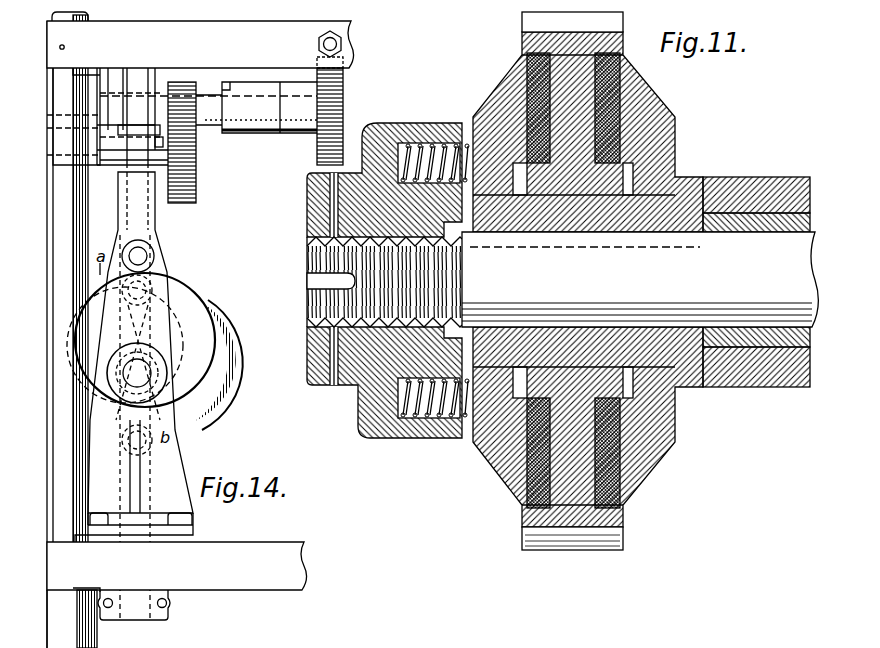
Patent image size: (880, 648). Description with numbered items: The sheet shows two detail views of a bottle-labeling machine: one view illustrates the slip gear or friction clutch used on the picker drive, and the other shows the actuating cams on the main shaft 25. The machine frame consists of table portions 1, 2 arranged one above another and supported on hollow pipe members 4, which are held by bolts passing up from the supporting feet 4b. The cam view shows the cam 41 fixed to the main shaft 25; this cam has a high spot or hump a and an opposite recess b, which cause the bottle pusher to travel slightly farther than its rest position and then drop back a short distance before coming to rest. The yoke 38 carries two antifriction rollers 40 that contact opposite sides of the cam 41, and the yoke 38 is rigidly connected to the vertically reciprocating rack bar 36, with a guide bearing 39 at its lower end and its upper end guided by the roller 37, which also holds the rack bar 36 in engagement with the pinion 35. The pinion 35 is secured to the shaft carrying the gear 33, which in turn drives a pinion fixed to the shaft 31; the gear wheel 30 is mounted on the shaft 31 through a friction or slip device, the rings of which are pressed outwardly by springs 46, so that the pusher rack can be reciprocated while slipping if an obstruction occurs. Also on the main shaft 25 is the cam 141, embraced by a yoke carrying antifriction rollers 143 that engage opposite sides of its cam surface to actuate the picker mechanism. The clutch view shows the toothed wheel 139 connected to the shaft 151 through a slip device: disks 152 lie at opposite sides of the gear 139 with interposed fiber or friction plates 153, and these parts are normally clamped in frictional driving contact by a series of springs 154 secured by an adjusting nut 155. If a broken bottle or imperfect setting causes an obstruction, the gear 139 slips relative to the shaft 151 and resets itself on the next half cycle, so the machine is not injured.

In FIG. 14, the table portion 1 is at (177, 566).
In FIG. 14, the central table 2 is at (200, 44).
In FIG. 14, the hollow pipe member 4 is at (53, 288).
In FIG. 14, the supporting foot 4b is at (52, 642).
In FIG. 14, the main shaft 25 is at (137, 373).
In FIG. 14, the gear wheel 30 is at (340, 106).
In FIG. 14, the shaft 31 is at (292, 100).
In FIG. 14, the gear 33 is at (197, 178).
In FIG. 14, the pinion 35 is at (143, 103).
In FIG. 14, the rack bar 36 is at (143, 78).
In FIG. 14, the roller 37 is at (135, 142).
In FIG. 14, the yoke 38 is at (157, 227).
In FIG. 14, the guide bearing 39 is at (149, 644).
In FIG. 14, the antifriction roller 40 is at (154, 254).
In FIG. 14, the cam 41 is at (181, 288).
In FIG. 14, the spring 46 is at (201, 644).
In FIG. 11, the toothed wheel 139 is at (528, 40).
In FIG. 14, the cam 141 is at (236, 371).
In FIG. 14, the antifriction roller 143 is at (136, 303).
In FIG. 11, the shaft 151 is at (640, 279).
In FIG. 11, the disk 152 is at (491, 96).
In FIG. 11, the friction plate 153 is at (538, 90).
In FIG. 11, the spring 154 is at (428, 145).
In FIG. 11, the adjusting nut 155 is at (370, 392).